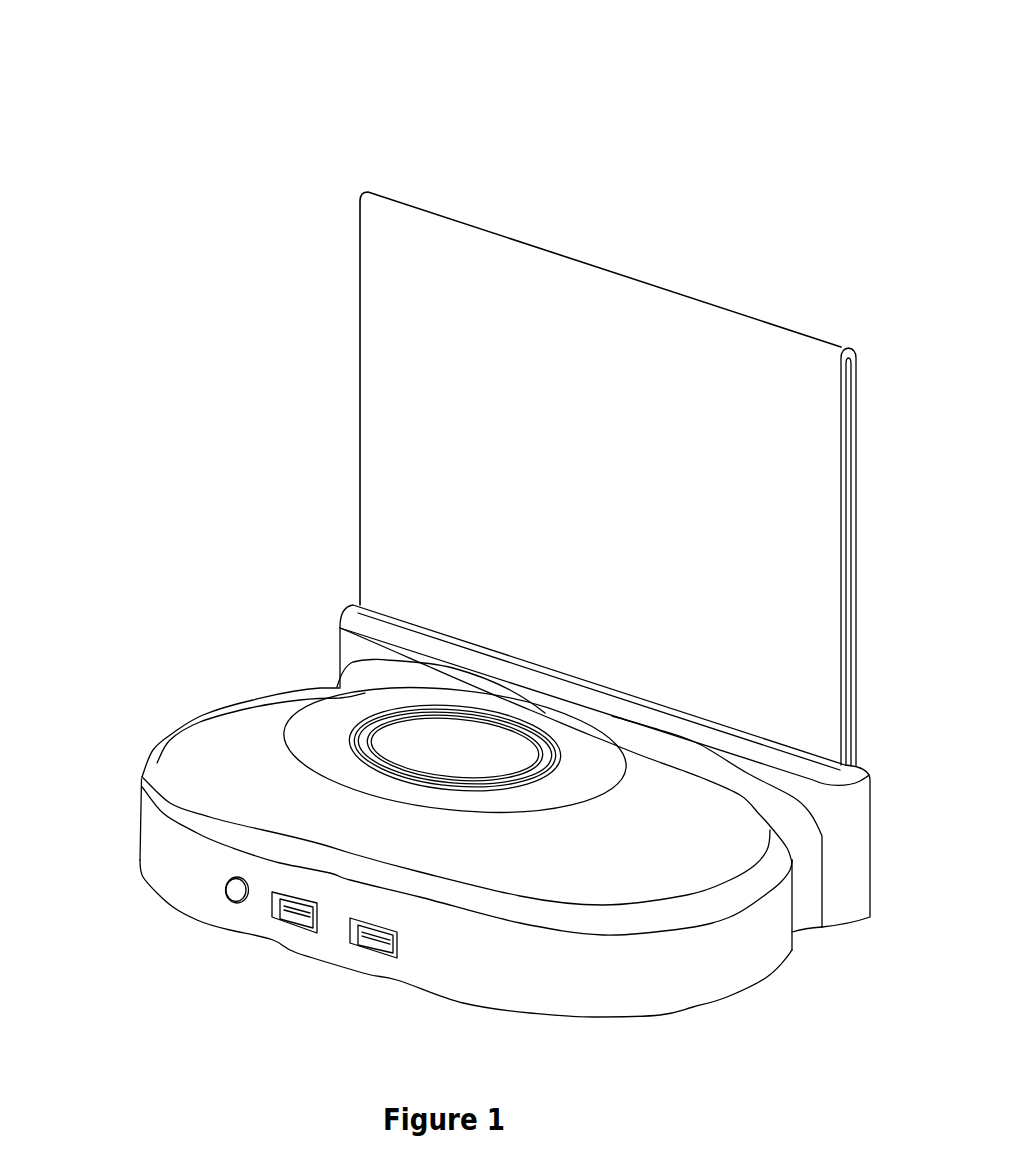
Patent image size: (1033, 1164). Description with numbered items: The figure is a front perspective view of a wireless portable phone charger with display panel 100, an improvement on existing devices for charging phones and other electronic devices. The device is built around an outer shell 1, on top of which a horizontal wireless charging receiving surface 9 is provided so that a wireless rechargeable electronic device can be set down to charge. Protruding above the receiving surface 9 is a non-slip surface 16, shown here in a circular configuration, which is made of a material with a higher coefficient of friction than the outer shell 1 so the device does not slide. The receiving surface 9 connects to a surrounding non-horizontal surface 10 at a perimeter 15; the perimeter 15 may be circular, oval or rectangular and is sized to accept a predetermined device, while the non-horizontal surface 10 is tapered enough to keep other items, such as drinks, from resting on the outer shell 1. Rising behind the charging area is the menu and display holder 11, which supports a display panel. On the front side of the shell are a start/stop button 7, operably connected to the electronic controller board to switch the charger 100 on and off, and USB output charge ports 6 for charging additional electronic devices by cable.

The wireless portable phone charger with display panel 100 is at (262, 205).
The outer shell 1 is at (140, 821).
The non-horizontal surface 10 is at (225, 752).
The horizontal wireless charging receiving surface 9 is at (308, 727).
The non-slip surface 16 is at (367, 722).
The menu and display holder 11 is at (410, 515).
The perimeter 15 is at (605, 797).
The start/stop button 7 is at (237, 901).
The USB output charge port 6 is at (356, 948).